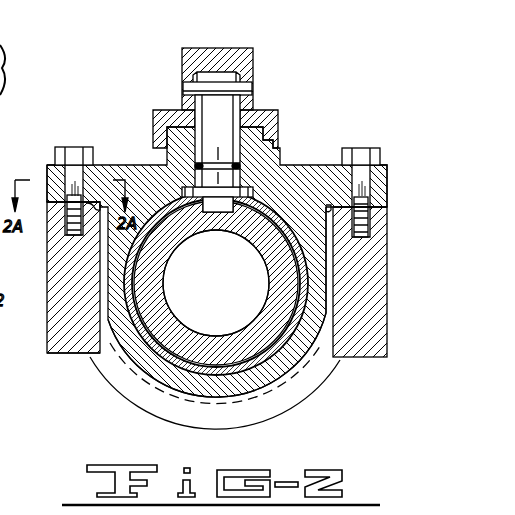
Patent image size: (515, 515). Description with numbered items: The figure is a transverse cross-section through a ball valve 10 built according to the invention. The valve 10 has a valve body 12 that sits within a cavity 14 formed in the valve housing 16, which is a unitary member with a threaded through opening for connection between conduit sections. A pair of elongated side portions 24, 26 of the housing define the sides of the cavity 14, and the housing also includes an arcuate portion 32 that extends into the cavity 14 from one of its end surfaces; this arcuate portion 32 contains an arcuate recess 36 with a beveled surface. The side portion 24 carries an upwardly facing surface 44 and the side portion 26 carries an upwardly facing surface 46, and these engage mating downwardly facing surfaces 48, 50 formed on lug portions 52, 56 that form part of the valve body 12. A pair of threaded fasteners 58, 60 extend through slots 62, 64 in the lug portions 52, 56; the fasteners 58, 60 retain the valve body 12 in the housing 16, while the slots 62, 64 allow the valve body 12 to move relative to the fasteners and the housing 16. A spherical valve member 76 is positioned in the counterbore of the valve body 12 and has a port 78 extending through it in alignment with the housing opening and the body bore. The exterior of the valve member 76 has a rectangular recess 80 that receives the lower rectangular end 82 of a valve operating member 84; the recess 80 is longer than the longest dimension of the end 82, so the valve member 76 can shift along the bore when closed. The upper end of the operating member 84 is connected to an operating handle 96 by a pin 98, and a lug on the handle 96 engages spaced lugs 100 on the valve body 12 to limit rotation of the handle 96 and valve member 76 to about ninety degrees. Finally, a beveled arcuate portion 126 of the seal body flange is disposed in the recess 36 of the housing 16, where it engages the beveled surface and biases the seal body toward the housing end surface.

The ball valve 10 is at (314, 76).
The valve body 12 is at (183, 382).
The cavity 14 is at (326, 209).
The valve housing 16 is at (67, 355).
The side portion 24 is at (64, 282).
The side portion 26 is at (353, 284).
The arcuate portion 32 is at (205, 417).
The arcuate recess 36 is at (272, 409).
The upwardly facing surface 44 is at (47, 200).
The upwardly facing surface 46 is at (378, 205).
The downwardly facing surface 48 is at (95, 203).
The downwardly facing surface 50 is at (340, 206).
The lug portion 52 is at (55, 173).
The lug portion 56 is at (383, 168).
The threaded fastener 58 is at (72, 147).
The threaded fastener 60 is at (360, 148).
The slot 62 is at (87, 173).
The slot 64 is at (338, 165).
The valve member 76 is at (192, 330).
The port 78 is at (210, 299).
The rectangular recess 80 is at (201, 213).
The lower rectangular end 82 is at (219, 208).
The valve operating member 84 is at (210, 127).
The operating handle 96 is at (203, 55).
The pin 98 is at (245, 89).
The spaced lugs 100 is at (280, 141).
The beveled arcuate portion 126 is at (152, 388).